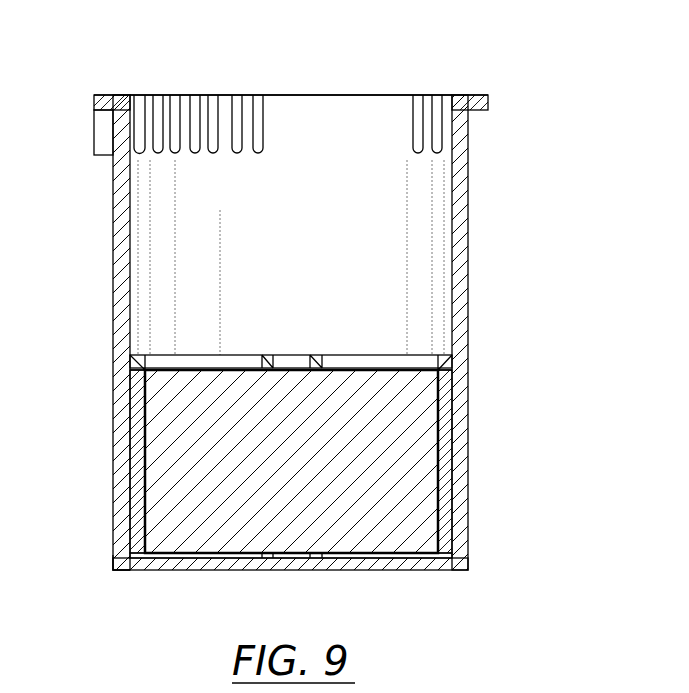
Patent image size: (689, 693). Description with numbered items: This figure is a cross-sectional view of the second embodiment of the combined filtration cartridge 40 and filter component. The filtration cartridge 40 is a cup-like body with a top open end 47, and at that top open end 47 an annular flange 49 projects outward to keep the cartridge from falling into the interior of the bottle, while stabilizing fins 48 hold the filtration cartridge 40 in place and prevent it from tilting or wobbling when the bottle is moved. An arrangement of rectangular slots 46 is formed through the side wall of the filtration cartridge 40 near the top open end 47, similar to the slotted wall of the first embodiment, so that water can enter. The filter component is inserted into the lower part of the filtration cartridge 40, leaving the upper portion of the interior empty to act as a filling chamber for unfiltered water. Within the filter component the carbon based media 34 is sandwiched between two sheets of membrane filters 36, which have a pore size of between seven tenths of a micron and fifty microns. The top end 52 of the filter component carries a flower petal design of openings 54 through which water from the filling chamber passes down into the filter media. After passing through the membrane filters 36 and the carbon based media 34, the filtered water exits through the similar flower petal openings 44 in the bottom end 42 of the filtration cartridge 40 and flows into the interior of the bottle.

The carbon based media 34 is at (383, 455).
The membrane filters 36 is at (383, 365).
The filtration cartridge 40 is at (112, 383).
The bottom end 42 is at (128, 572).
The openings 44 is at (365, 562).
The rectangular slots 46 is at (195, 112).
The top open end 47 is at (360, 95).
The stabilizing fins 48 is at (105, 137).
The annular flange 49 is at (482, 95).
The top end 52 is at (312, 355).
The openings 54 is at (242, 355).